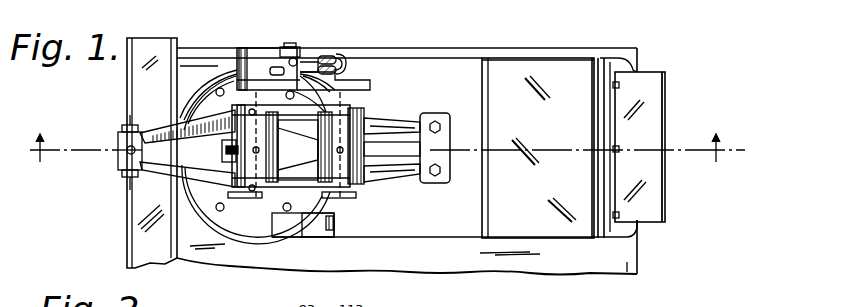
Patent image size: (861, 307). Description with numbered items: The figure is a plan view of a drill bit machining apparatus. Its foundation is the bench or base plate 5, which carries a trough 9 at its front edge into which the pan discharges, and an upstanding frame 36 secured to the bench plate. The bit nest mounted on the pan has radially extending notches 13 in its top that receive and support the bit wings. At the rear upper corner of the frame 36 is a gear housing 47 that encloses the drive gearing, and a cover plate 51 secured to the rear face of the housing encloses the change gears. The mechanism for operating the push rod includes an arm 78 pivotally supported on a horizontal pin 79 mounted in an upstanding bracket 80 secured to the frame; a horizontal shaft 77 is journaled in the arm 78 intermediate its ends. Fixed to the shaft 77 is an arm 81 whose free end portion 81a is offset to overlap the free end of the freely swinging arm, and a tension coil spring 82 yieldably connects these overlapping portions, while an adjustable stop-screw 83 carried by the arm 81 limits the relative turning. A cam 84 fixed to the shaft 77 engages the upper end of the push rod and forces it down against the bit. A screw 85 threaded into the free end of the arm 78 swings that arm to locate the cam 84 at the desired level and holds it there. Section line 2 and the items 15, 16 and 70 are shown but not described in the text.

The section line 2- 2 is at (376, 149).
The bench or base plate 5 is at (624, 262).
The trough 9 is at (129, 252).
The radially extending grooves or notches 13 is at (300, 57).
The bolt 15 is at (290, 47).
The head block 16 is at (278, 62).
The upstanding frame 36 is at (427, 236).
The gear housing 47 is at (566, 225).
The cover plate 51 is at (656, 107).
The lower arm 70 is at (188, 188).
The horizontal shaft 77 is at (256, 212).
The arm 78 is at (163, 128).
The horizontal pin 79 is at (352, 192).
The upstanding bracket 80 is at (398, 152).
The arm 81 is at (222, 80).
The free end portion 81a is at (388, 97).
The tension coil spring 82 is at (348, 55).
The adjustable stop-screw 83 is at (322, 62).
The cam 84 is at (222, 155).
The screw 85 is at (118, 163).